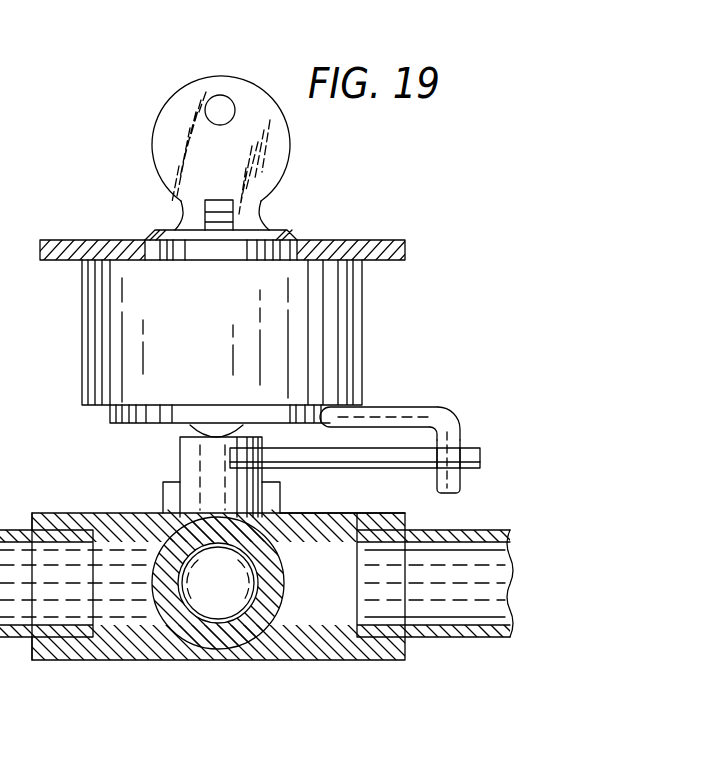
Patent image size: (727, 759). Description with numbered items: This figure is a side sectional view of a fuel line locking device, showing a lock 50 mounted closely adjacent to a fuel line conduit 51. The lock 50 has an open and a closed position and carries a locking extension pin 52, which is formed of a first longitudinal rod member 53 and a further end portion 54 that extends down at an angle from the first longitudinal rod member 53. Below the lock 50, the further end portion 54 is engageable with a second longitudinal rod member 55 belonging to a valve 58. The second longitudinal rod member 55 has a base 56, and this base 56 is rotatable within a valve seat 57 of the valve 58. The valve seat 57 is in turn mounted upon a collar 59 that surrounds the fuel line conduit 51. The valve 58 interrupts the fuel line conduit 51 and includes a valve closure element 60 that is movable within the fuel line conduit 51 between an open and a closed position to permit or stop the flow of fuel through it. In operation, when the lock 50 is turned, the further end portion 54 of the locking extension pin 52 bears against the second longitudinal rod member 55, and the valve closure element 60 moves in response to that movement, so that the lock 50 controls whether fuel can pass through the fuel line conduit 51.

The lock 50 is at (300, 236).
The fuel line conduit 51 is at (453, 640).
The locking extension pin 52 is at (389, 411).
The first longitudinal rod member 53 is at (444, 408).
The further end portion 54 is at (461, 490).
The second longitudinal rod member 55 is at (494, 436).
The base 56 is at (272, 469).
The valve seat 57 is at (163, 485).
The valve 58 is at (290, 662).
The collar 59 is at (396, 518).
The valve closure element 60 is at (232, 660).